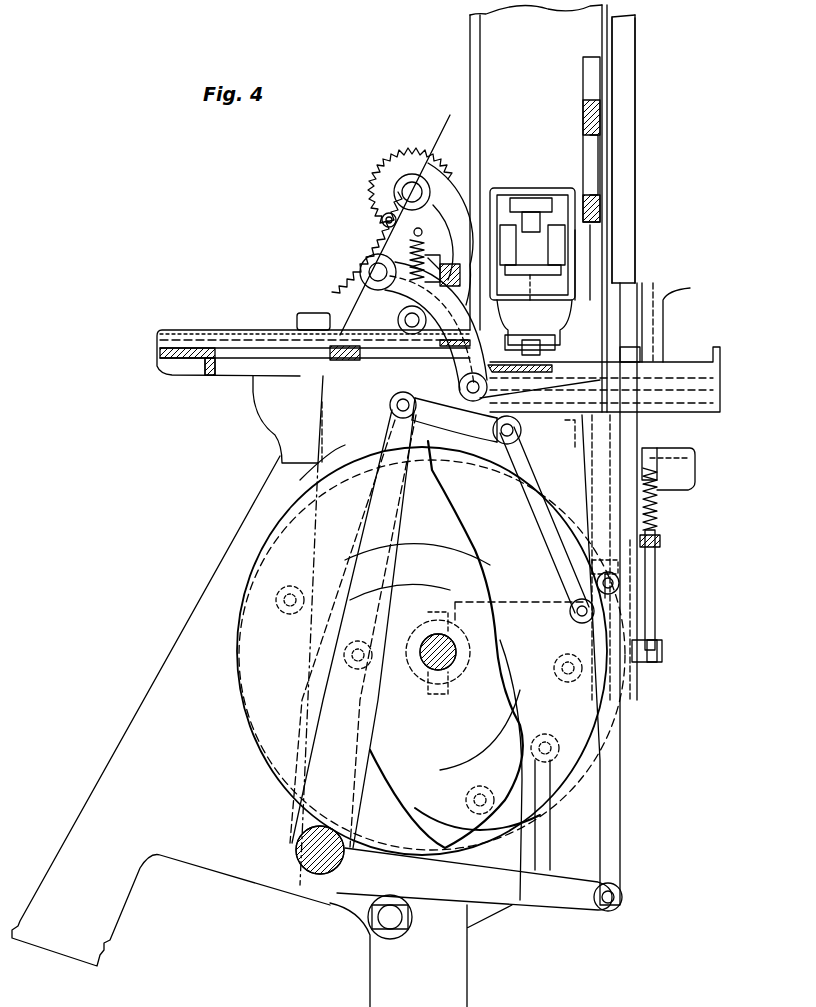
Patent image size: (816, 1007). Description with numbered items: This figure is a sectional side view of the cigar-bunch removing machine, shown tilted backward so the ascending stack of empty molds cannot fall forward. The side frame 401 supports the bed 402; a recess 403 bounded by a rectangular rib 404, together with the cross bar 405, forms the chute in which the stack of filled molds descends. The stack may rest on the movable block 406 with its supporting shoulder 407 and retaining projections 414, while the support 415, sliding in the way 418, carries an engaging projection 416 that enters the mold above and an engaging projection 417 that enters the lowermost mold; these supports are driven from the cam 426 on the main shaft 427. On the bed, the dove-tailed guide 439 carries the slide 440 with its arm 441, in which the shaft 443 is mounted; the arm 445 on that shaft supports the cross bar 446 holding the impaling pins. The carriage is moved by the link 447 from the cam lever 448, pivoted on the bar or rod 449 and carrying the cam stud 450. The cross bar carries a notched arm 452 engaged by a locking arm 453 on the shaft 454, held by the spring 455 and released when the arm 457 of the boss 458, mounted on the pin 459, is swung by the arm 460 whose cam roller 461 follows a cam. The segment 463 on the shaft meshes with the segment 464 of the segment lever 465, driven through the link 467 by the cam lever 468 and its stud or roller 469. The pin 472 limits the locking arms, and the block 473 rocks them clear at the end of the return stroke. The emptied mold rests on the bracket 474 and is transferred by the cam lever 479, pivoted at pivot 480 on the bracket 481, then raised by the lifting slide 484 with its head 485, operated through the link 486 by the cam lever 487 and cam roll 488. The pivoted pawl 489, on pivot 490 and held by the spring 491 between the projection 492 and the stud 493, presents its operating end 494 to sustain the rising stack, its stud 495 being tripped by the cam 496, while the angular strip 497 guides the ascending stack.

The side frame 401 is at (262, 691).
The bed 402 is at (313, 354).
The recess 403 is at (532, 219).
The rectangular rib 404 is at (480, 123).
The cross bar 405 is at (585, 108).
The movable block 406 is at (534, 327).
The supporting shoulder 407 is at (568, 300).
The retaining projection 414 is at (522, 258).
The support 415 is at (540, 258).
The engaging projection 416 is at (522, 198).
The engaging projection 417 is at (540, 276).
The way 418 is at (556, 196).
The cam 426 is at (518, 770).
The main shaft 427 is at (435, 672).
The dove-tailed guide 439 is at (180, 346).
The slide 440 is at (296, 318).
The arm 441 is at (372, 222).
The shaft 443 is at (413, 190).
The arm 445 is at (448, 215).
The cross bar 446 is at (465, 312).
The link 447 is at (390, 405).
The cam lever 448 is at (329, 440).
The bar or rod 449 is at (296, 852).
The cam stud 450 is at (283, 598).
The notched arm 452 is at (440, 282).
The locking arm 453 is at (432, 268).
The shaft 454 is at (360, 252).
The spring 455 is at (372, 280).
The arm 457 is at (454, 420).
The boss 458 is at (455, 421).
The pin 459 is at (524, 426).
The arm 460 is at (550, 440).
The cam roller 461 is at (570, 614).
The segment 463 is at (403, 156).
The segment 464 is at (360, 272).
The segment lever 465 is at (459, 387).
The link 467 is at (434, 644).
The cam lever 468 is at (353, 629).
The stud or roller 469 is at (366, 664).
The pin 472 is at (398, 313).
The block 473 is at (560, 373).
The bracket 474 is at (705, 385).
The cam lever 479 is at (548, 580).
The pivot 480 is at (554, 668).
The bracket 481 is at (640, 608).
The lifting slide 484 is at (600, 480).
The head 485 is at (642, 360).
The link 486 is at (622, 750).
The cam lever 487 is at (479, 879).
The cam roll 488 is at (477, 801).
The pivoted pawl 489 is at (640, 430).
The pivot 490 is at (690, 466).
The spring 491 is at (660, 522).
The projection 492 is at (660, 462).
The stud 493 is at (660, 544).
The operating end 494 is at (664, 296).
The stud 495 is at (640, 660).
The cam 496 is at (556, 812).
The angular strip 497 is at (636, 100).